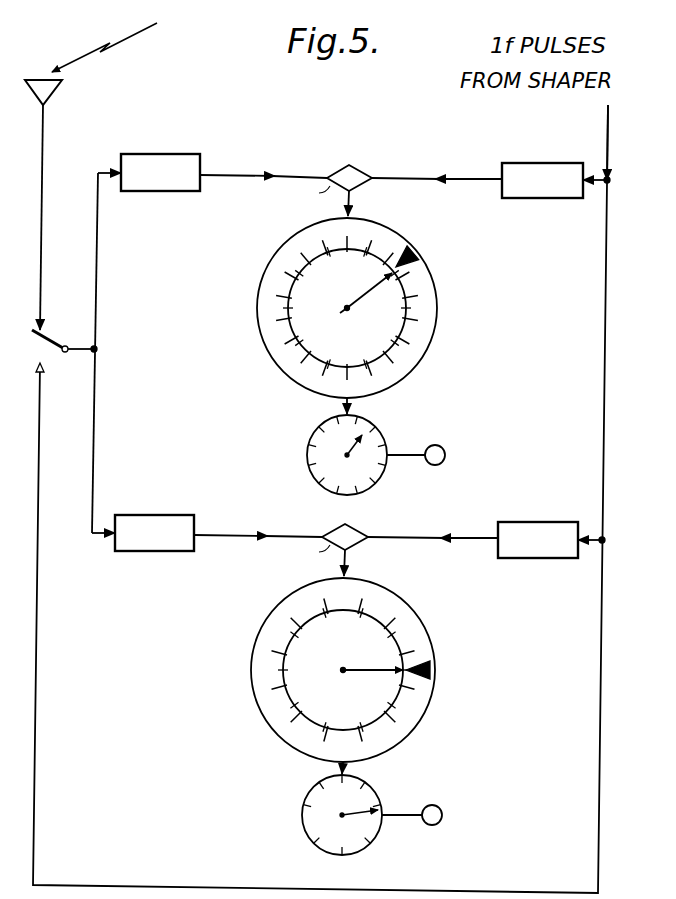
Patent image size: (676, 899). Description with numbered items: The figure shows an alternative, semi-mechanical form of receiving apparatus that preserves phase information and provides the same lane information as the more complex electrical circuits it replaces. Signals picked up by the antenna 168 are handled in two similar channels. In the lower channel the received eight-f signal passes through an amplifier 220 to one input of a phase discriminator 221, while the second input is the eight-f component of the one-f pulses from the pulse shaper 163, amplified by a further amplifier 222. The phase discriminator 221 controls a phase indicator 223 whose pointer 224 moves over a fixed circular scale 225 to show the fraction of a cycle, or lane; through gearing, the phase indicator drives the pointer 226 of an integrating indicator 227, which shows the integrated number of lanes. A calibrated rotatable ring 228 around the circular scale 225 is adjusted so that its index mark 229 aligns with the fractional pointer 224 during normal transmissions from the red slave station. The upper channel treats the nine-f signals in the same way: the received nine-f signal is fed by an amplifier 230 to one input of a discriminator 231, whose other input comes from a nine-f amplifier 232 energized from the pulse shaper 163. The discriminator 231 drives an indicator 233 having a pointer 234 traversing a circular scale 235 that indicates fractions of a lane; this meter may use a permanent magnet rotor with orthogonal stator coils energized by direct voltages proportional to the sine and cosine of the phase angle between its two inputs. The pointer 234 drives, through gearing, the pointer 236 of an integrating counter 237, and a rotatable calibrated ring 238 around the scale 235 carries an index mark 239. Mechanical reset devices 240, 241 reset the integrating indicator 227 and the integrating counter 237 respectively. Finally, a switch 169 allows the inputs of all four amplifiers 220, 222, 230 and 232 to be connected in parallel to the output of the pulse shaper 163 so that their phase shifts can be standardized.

The pulse shaper 163 is at (562, 138).
The antenna 168 is at (60, 93).
The switch 169 is at (55, 334).
The amplifier 230 is at (159, 154).
The discriminator 231 is at (351, 165).
The 9f amplifier 232 is at (553, 163).
The indicator 233 is at (412, 239).
The rotatable calibrated ring 238 is at (421, 328).
The circular scale 235 is at (399, 343).
The pointer 234 is at (374, 293).
The index mark 239 is at (422, 258).
The integrating counter 237 is at (335, 492).
The pointer 236 is at (358, 437).
The mechanical reset device 241 is at (446, 450).
The amplifier 220 is at (152, 506).
The phase discriminator 221 is at (352, 527).
The amplifier 222 is at (553, 522).
The phase indicator 223 is at (434, 633).
The calibrated rotatable ring 228 is at (403, 613).
The fixed circular scale 225 is at (394, 703).
The pointer 224 is at (351, 672).
The index mark 229 is at (428, 667).
The integrating indicator 227 is at (335, 855).
The pointer 226 is at (351, 817).
The mechanical reset device 240 is at (443, 807).